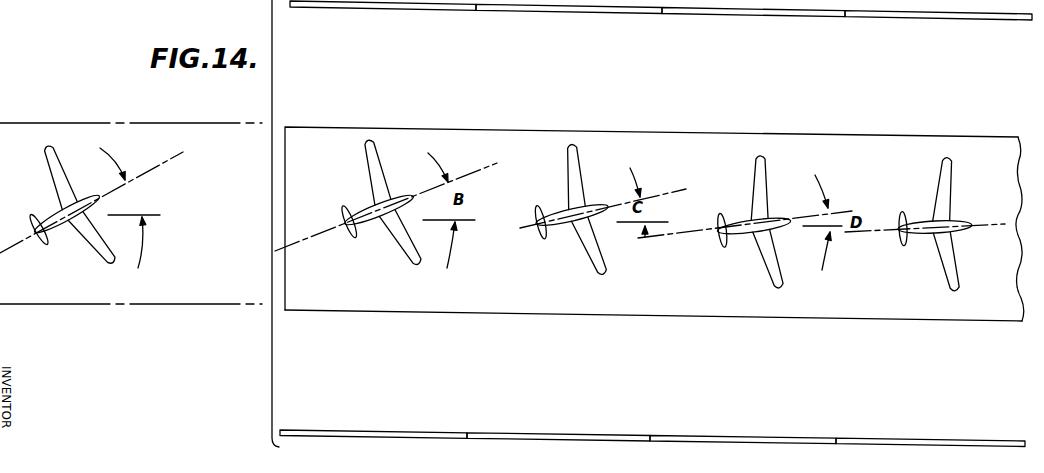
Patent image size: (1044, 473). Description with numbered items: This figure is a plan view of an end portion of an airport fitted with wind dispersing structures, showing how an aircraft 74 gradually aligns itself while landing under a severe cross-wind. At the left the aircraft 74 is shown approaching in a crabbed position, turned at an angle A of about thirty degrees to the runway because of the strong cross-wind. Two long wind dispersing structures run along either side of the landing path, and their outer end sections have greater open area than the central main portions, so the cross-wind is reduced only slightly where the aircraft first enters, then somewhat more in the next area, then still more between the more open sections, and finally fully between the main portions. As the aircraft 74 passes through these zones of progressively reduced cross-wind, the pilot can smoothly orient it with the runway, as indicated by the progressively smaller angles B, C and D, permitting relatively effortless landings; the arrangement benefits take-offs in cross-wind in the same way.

The aircraft 74 is at (66, 244).